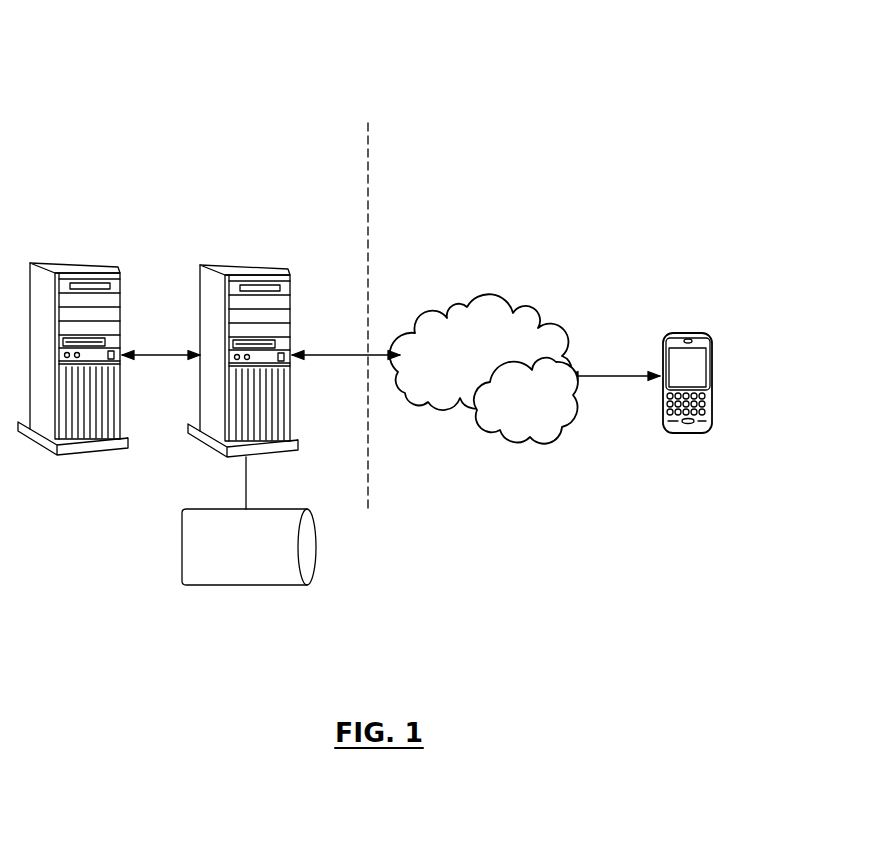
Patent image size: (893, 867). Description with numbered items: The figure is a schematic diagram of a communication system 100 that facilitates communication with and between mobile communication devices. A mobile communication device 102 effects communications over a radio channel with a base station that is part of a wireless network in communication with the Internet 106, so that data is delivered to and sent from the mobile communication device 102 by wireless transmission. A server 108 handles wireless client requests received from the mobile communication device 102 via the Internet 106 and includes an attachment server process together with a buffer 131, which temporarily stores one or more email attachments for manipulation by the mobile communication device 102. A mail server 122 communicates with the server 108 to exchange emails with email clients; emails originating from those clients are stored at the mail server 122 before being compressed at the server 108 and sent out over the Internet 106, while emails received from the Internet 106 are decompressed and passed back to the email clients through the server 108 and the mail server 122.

The communication system 100 is at (237, 86).
The mobile communication device 102 is at (708, 325).
The Internet 106 is at (503, 294).
The server 108 is at (250, 278).
The mail server 122 is at (78, 268).
The buffer 131 is at (182, 546).